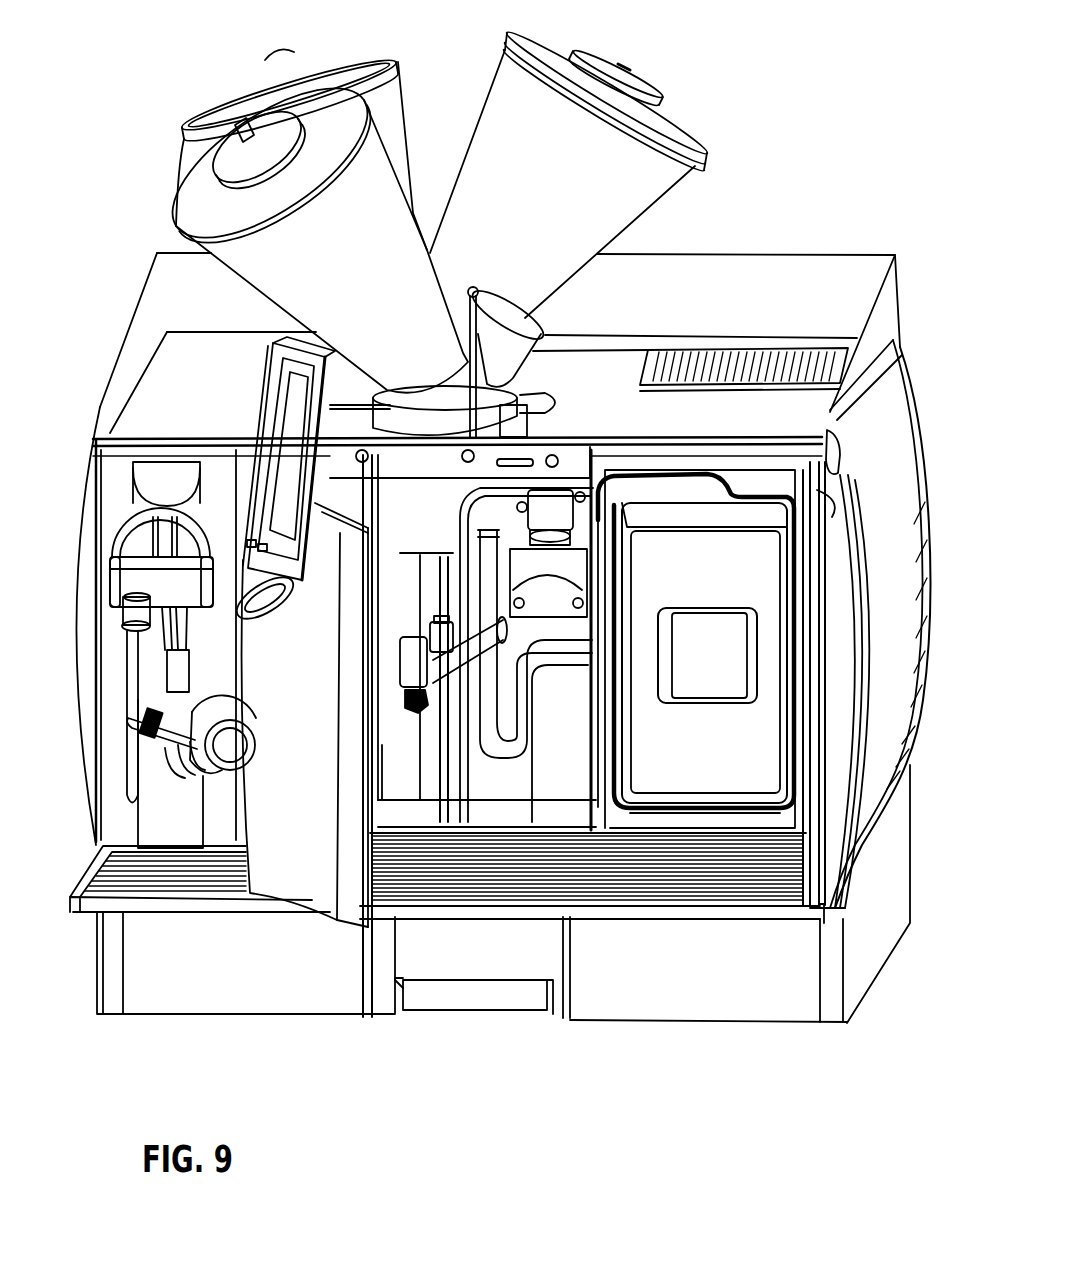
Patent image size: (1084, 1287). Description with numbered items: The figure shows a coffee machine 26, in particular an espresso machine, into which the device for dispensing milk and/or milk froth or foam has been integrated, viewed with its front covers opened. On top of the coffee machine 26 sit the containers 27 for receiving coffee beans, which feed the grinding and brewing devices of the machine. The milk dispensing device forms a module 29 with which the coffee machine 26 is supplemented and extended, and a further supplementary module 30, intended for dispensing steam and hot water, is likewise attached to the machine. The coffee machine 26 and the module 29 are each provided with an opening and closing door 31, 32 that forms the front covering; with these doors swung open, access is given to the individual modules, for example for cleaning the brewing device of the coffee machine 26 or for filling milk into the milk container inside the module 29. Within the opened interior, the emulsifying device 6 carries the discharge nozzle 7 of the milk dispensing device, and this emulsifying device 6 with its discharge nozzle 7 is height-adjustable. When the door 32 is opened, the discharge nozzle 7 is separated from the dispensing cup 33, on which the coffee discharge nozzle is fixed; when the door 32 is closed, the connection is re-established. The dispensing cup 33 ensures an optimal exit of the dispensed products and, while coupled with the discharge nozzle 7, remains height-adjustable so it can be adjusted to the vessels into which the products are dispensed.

The container 27 is at (393, 113).
The emulsifying device 6 is at (412, 637).
The discharge nozzle 7 is at (418, 712).
The dispensing cup 33 is at (135, 698).
The module 30 is at (178, 1017).
The door 32 is at (337, 920).
The coffee machine 26 is at (487, 1018).
The module 29 is at (764, 1020).
The door 31 is at (835, 827).